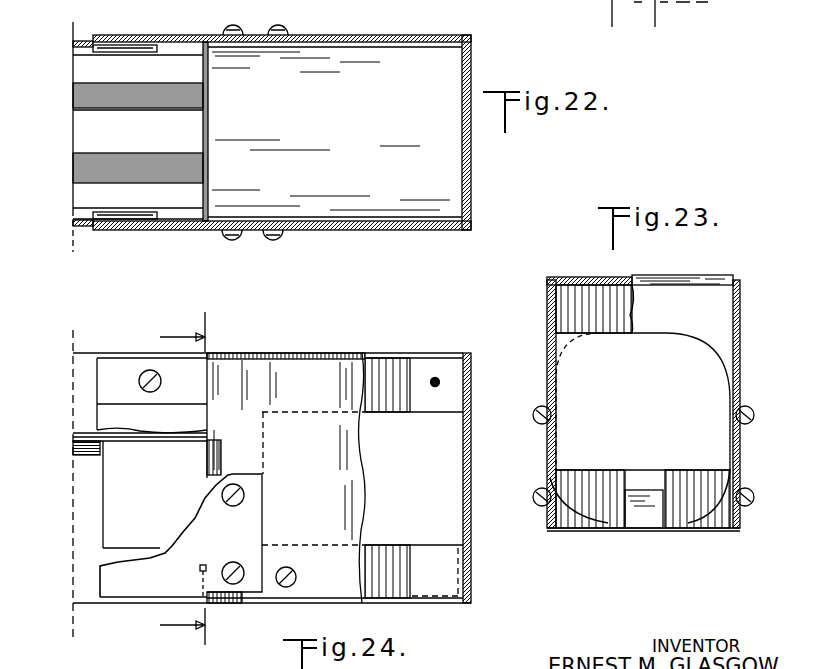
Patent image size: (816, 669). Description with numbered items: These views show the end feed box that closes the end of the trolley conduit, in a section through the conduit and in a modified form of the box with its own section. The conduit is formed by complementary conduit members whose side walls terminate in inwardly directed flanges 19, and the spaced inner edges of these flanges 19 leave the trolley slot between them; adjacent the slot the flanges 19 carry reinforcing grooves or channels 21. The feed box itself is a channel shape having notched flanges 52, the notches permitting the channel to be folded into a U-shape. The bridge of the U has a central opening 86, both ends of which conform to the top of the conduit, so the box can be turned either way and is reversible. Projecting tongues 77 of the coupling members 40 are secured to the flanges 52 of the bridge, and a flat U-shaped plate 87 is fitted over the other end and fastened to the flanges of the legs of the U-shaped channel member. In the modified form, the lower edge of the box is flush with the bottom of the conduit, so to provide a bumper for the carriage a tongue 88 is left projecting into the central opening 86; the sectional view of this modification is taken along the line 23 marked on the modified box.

In FIG. 22, the inwardly directed flanges 19 is at (86, 73).
In FIG. 22, the reinforcing grooves or channels 21 is at (84, 165).
In FIG. 24, the section line 23— 23 is at (182, 481).
In FIG. 22, the coupling members 40 is at (164, 231).
In FIG. 23, the coupling members 40 is at (547, 453).
In FIG. 24, the coupling members 40 is at (140, 597).
In FIG. 24, the notched flanges 52 is at (410, 402).
In FIG. 22, the projecting tongues 77 is at (257, 238).
In FIG. 24, the projecting tongues 77 is at (262, 508).
In FIG. 23, the central opening 86 is at (668, 336).
In FIG. 22, the flat U-shaped plate 87 is at (471, 53).
In FIG. 23, the flat U-shaped plate 87 is at (741, 330).
In FIG. 24, the flat U-shaped plate 87 is at (330, 372).
In FIG. 23, the tongue 88 is at (648, 498).
In FIG. 24, the tongue 88 is at (206, 566).